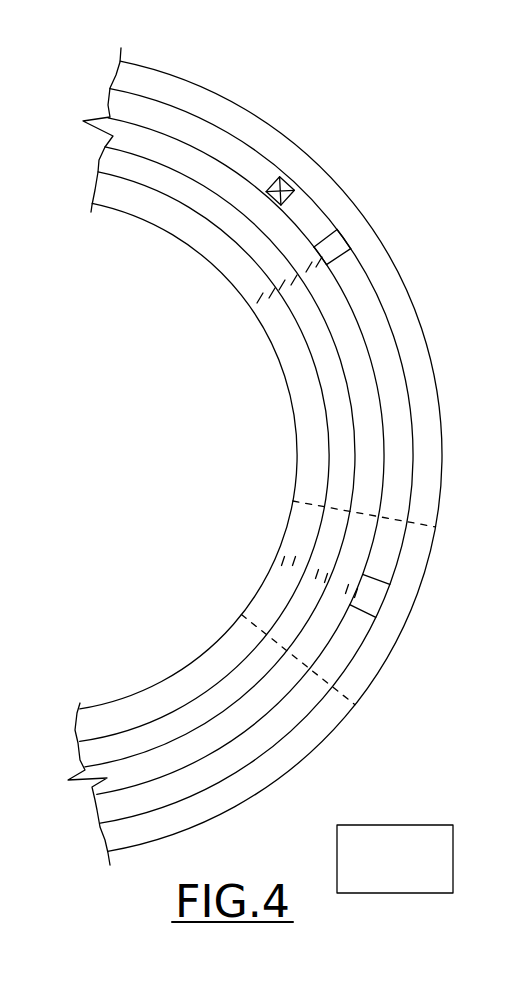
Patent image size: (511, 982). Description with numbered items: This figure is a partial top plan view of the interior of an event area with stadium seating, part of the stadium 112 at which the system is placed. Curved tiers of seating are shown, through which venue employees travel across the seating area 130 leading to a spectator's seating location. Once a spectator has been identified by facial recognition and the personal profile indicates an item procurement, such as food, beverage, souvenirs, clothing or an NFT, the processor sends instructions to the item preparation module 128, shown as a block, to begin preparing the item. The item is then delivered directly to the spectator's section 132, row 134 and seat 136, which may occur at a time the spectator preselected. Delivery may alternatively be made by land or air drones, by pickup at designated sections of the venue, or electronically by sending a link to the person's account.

The stadium 112 is at (357, 173).
The item preparation module 128 is at (409, 825).
The seating area 130 is at (348, 262).
The section 132 is at (418, 542).
The row 134 is at (305, 215).
The seat 136 is at (282, 182).